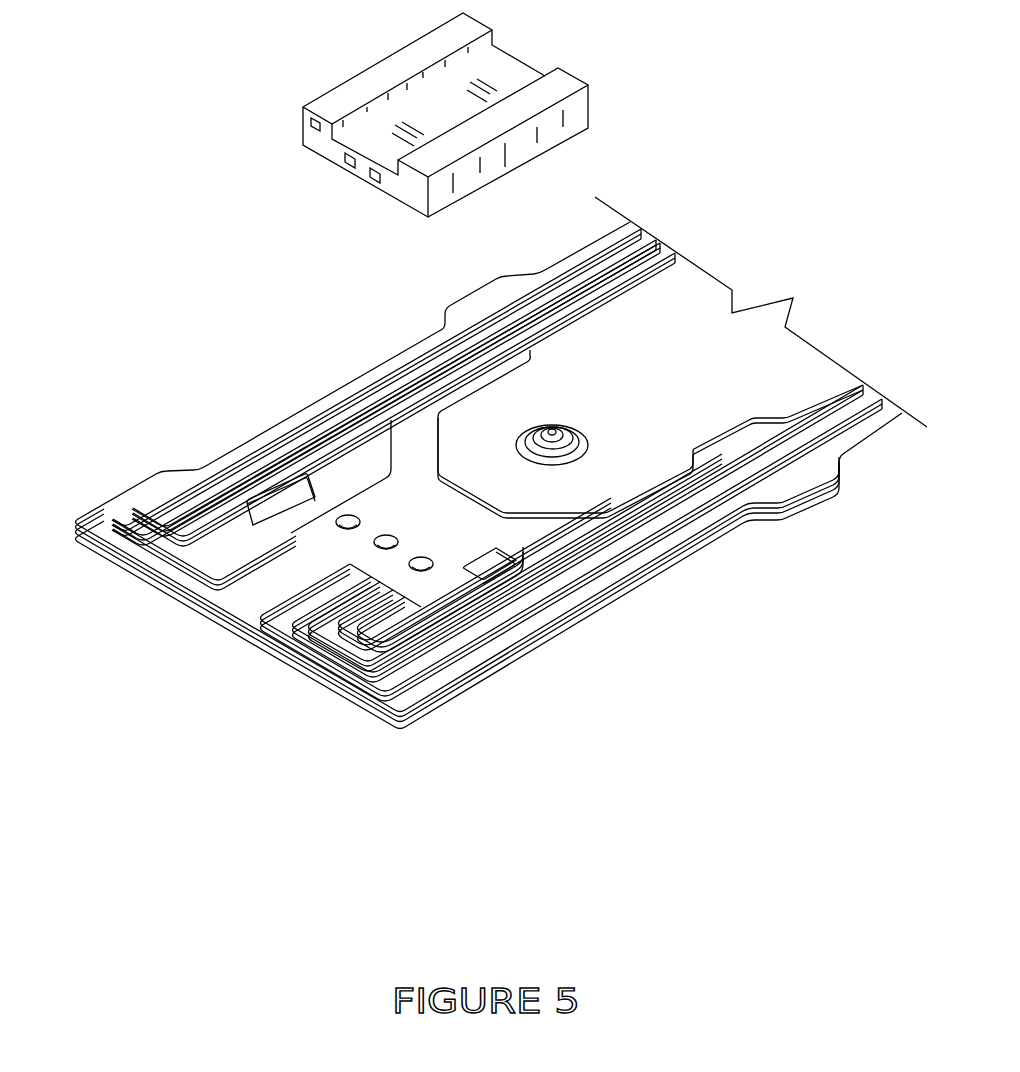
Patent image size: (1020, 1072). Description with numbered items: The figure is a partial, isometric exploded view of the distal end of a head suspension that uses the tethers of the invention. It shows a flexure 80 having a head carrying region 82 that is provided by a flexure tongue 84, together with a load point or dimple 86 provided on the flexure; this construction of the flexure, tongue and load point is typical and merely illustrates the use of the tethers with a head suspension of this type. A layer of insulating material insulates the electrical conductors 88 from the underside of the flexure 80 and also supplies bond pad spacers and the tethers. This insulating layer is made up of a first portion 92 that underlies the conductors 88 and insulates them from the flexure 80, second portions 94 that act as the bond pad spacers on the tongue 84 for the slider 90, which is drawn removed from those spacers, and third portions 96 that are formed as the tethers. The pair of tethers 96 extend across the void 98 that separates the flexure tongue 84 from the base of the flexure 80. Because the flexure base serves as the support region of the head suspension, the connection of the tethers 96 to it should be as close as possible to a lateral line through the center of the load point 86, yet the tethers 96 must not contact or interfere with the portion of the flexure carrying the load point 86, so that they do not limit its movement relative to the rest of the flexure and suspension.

The flexure 80 is at (697, 307).
The head carrying region 82 is at (223, 455).
The flexure tongue 84 is at (380, 513).
The load point 86 is at (558, 427).
The electrical conductors 88 is at (203, 525).
The slider 90 is at (333, 93).
The first portion 92 is at (560, 352).
The second portions 94 is at (313, 500).
The tethers 96 is at (373, 447).
The void 98 is at (420, 447).